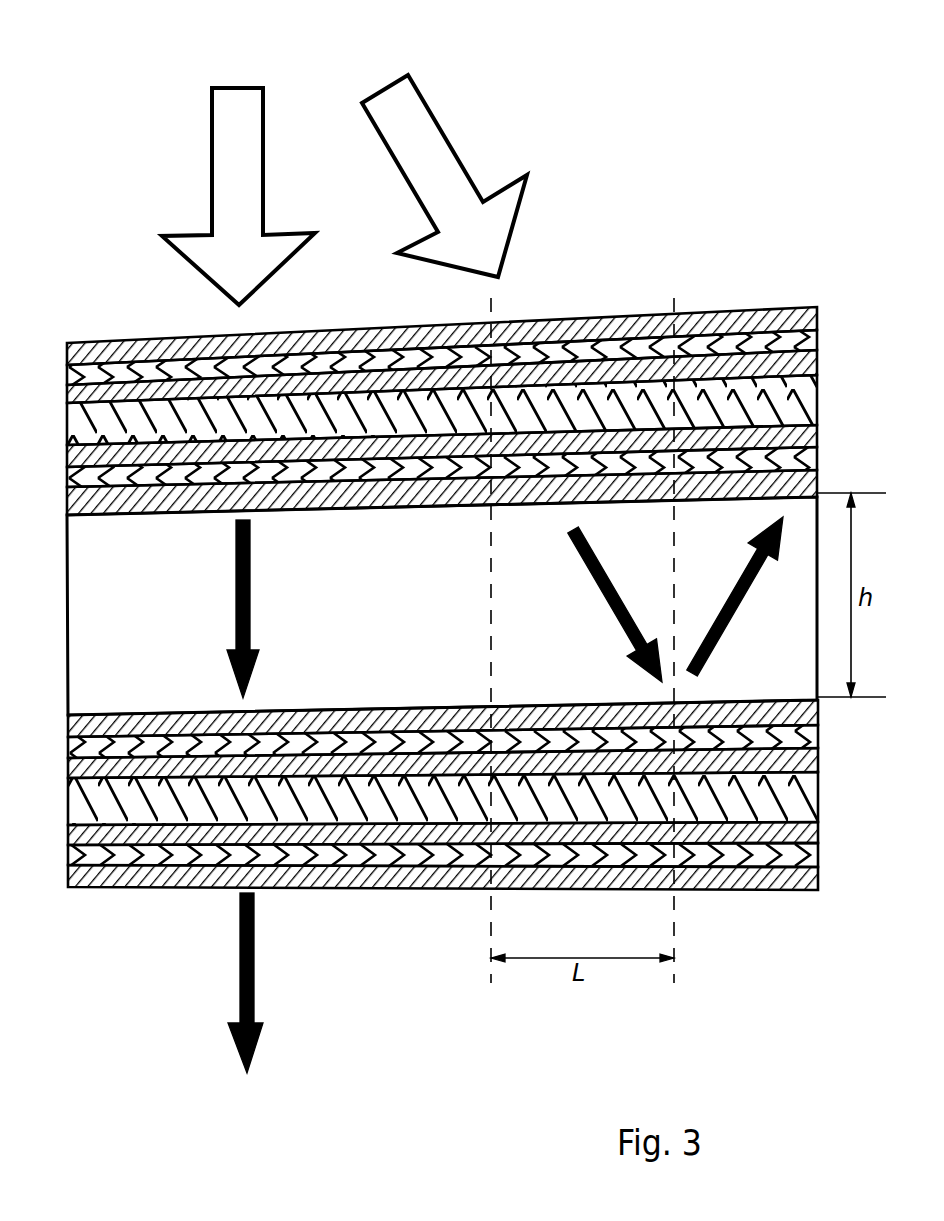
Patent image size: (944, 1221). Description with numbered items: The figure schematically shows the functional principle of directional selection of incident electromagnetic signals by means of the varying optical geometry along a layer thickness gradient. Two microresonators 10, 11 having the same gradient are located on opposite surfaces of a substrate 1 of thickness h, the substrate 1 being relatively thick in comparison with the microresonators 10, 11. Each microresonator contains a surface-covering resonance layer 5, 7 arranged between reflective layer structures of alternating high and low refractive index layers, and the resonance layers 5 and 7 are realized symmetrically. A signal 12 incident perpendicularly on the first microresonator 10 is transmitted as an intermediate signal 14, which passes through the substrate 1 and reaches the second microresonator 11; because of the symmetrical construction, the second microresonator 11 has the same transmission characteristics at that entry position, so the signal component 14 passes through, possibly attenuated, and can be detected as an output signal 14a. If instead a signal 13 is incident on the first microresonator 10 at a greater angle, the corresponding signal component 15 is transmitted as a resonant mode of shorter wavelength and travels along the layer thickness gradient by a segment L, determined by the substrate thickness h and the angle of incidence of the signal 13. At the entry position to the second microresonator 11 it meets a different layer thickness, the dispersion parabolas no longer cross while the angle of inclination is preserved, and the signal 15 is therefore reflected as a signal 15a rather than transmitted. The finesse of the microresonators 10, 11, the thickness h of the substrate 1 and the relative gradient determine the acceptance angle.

The substrate 1 is at (102, 596).
The resonance layer 5 is at (80, 428).
The resonance layer 7 is at (80, 795).
The first microresonator 10 is at (818, 305).
The second microresonator 11 is at (818, 700).
The signal 12 is at (212, 159).
The obliquely incident signal 13 is at (521, 226).
The intermediate signal 14 is at (236, 618).
The output signal 14a is at (240, 962).
The signal component 15 is at (606, 600).
The reflected signal 15a is at (755, 577).